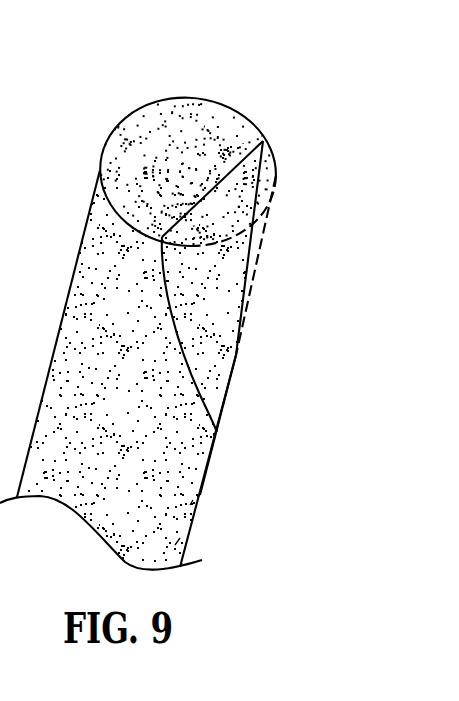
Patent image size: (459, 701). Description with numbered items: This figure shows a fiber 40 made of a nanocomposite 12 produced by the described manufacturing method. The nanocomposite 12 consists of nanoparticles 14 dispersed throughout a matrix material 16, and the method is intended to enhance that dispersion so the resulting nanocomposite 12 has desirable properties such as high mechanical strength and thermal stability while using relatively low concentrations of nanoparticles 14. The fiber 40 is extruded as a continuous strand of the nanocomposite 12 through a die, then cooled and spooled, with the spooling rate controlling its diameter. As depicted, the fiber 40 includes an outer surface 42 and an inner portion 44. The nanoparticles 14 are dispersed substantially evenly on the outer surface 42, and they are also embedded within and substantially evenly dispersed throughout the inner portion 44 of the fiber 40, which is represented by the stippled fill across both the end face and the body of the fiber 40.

The nanocomposite 12 is at (74, 270).
The nanoparticles 14 is at (163, 157).
The matrix material 16 is at (233, 141).
The fiber 40 is at (187, 455).
The outer surface 42 is at (108, 428).
The inner portion 44 is at (207, 294).